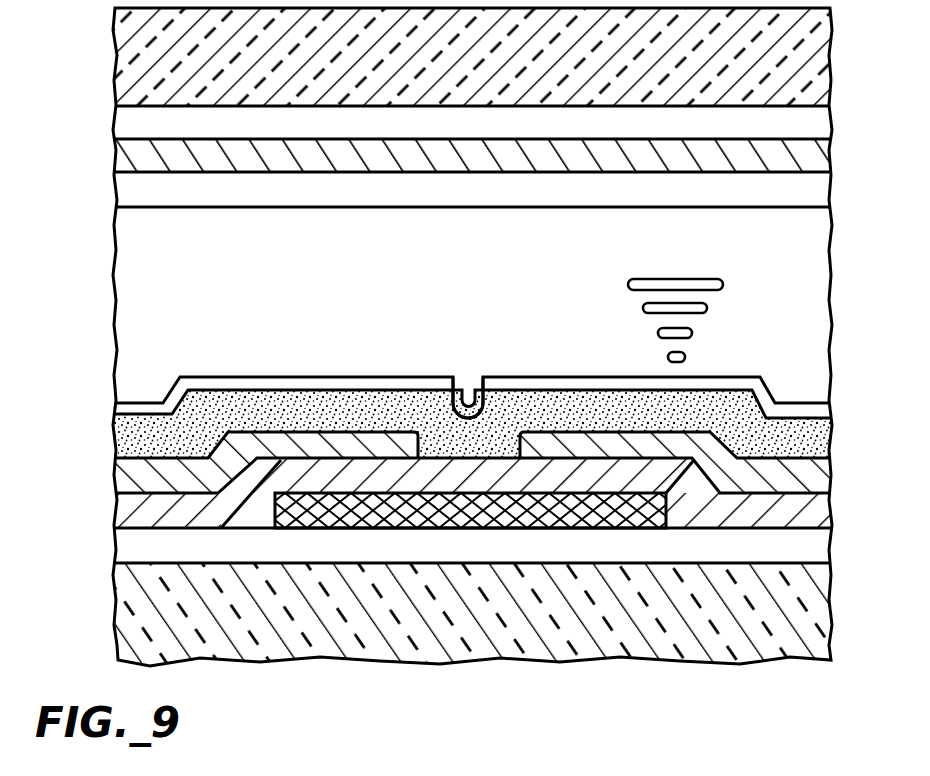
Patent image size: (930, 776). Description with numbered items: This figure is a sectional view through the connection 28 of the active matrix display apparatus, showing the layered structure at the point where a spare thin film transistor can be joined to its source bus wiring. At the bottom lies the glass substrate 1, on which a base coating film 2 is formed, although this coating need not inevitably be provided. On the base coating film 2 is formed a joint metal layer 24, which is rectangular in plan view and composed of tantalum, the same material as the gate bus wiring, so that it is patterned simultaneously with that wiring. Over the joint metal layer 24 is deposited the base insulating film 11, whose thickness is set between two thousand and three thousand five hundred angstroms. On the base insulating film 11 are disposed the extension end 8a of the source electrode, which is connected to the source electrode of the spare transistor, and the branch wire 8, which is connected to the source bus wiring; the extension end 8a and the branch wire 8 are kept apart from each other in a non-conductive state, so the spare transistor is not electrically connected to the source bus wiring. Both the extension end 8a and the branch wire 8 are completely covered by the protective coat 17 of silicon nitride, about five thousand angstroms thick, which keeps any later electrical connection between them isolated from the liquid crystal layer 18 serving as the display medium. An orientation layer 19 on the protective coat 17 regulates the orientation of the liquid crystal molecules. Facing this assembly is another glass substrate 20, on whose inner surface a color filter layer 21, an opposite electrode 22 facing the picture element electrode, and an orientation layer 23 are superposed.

The glass substrate 20 is at (118, 52).
The color filter layer 21 is at (117, 118).
The opposite electrode 22 is at (117, 154).
The orientation layer 23 is at (118, 197).
The orientation layer 19 is at (114, 408).
The protective coat 17 is at (114, 432).
The branch wire 8 is at (113, 477).
The extension end of source electrode 8a is at (625, 445).
The base insulating film 11 is at (114, 512).
The joint metal layer 24 is at (300, 527).
The base coating film 2 is at (115, 548).
The glass substrate 1 is at (115, 636).
The connection 28 is at (464, 354).
The liquid crystal layer 18 is at (688, 279).